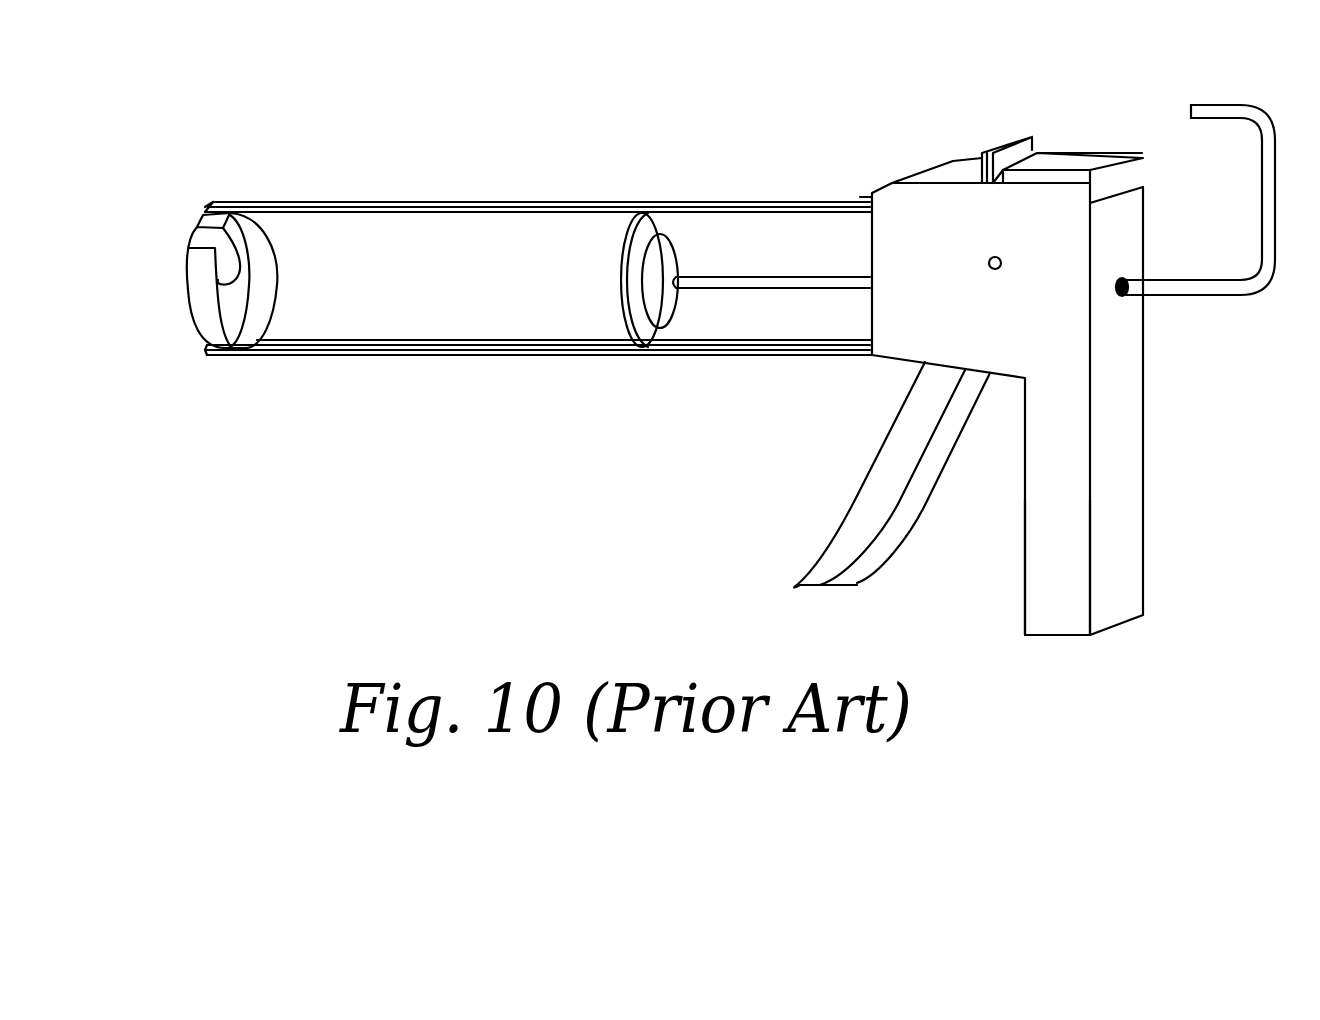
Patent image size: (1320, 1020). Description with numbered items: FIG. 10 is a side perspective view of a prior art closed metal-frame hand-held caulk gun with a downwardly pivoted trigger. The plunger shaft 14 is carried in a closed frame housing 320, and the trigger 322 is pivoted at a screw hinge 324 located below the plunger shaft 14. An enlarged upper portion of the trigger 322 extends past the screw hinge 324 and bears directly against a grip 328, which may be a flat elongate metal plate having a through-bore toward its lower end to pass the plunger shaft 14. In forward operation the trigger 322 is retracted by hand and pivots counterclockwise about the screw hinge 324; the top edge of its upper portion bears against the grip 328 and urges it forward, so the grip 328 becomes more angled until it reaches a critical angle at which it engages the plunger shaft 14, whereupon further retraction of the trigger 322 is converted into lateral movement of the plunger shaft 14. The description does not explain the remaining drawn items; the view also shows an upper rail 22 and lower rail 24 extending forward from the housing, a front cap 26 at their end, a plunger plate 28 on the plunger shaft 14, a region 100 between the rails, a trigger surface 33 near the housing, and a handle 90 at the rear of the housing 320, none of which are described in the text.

The plunger shaft 14 is at (790, 277).
The upper rail 22 is at (447, 200).
The lower rail 24 is at (434, 356).
The front cap 26 is at (279, 262).
The plunger plate 28 is at (642, 242).
The trigger 33 is at (870, 313).
The handle 90 is at (1090, 635).
The cartridge receiving space 100 is at (707, 307).
The closed frame housing 320 is at (923, 183).
The trigger 322 is at (1092, 158).
The screw hinge 324 is at (998, 257).
The grip 328 is at (1002, 143).